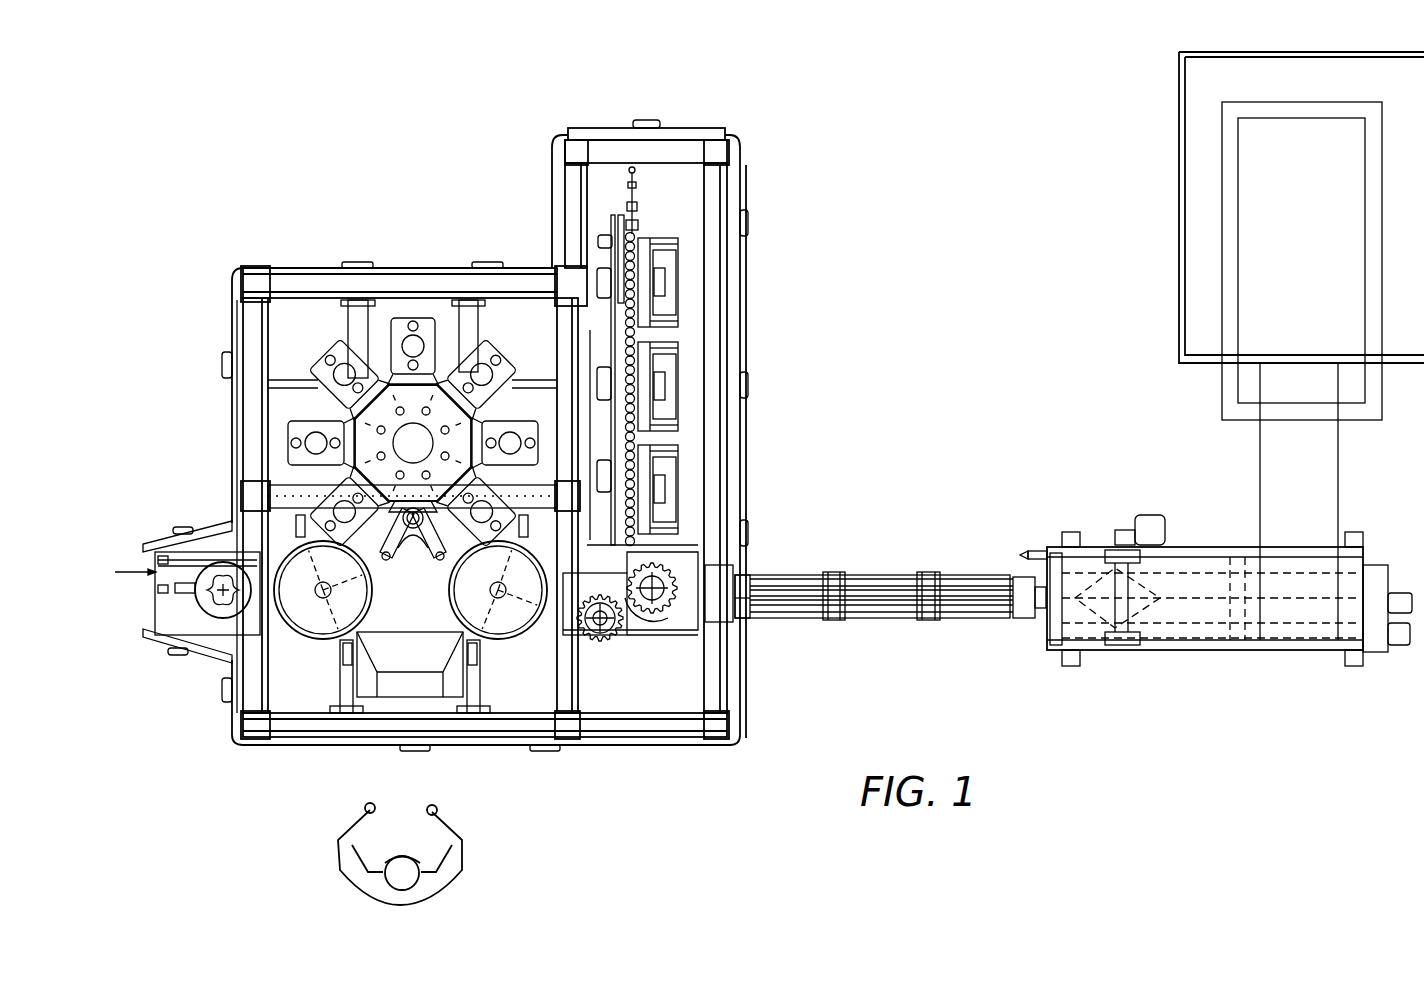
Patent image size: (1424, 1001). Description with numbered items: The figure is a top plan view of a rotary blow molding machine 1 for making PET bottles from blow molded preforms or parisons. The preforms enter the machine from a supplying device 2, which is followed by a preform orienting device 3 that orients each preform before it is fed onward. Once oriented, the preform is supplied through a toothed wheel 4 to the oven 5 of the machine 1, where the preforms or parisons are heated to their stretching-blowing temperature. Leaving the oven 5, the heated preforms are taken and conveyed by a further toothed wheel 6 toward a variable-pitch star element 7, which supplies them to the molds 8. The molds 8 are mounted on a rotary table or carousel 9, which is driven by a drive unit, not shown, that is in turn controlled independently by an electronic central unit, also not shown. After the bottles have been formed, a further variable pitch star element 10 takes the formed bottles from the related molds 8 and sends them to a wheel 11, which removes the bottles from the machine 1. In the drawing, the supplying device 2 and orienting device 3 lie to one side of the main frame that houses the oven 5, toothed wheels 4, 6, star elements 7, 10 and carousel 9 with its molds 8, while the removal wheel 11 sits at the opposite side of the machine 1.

The blow molding machine 1 is at (367, 182).
The supplying device 2 is at (1160, 338).
The preform orienting device 3 is at (1116, 687).
The toothed wheel 4 is at (672, 570).
The oven 5 is at (637, 378).
The toothed wheel 6 is at (601, 642).
The variable-pitch star element 7 is at (500, 643).
The molds 8 is at (325, 503).
The rotary table or carousel 9 is at (385, 418).
The variable pitch star element 10 is at (312, 620).
The wheel 11 is at (223, 590).